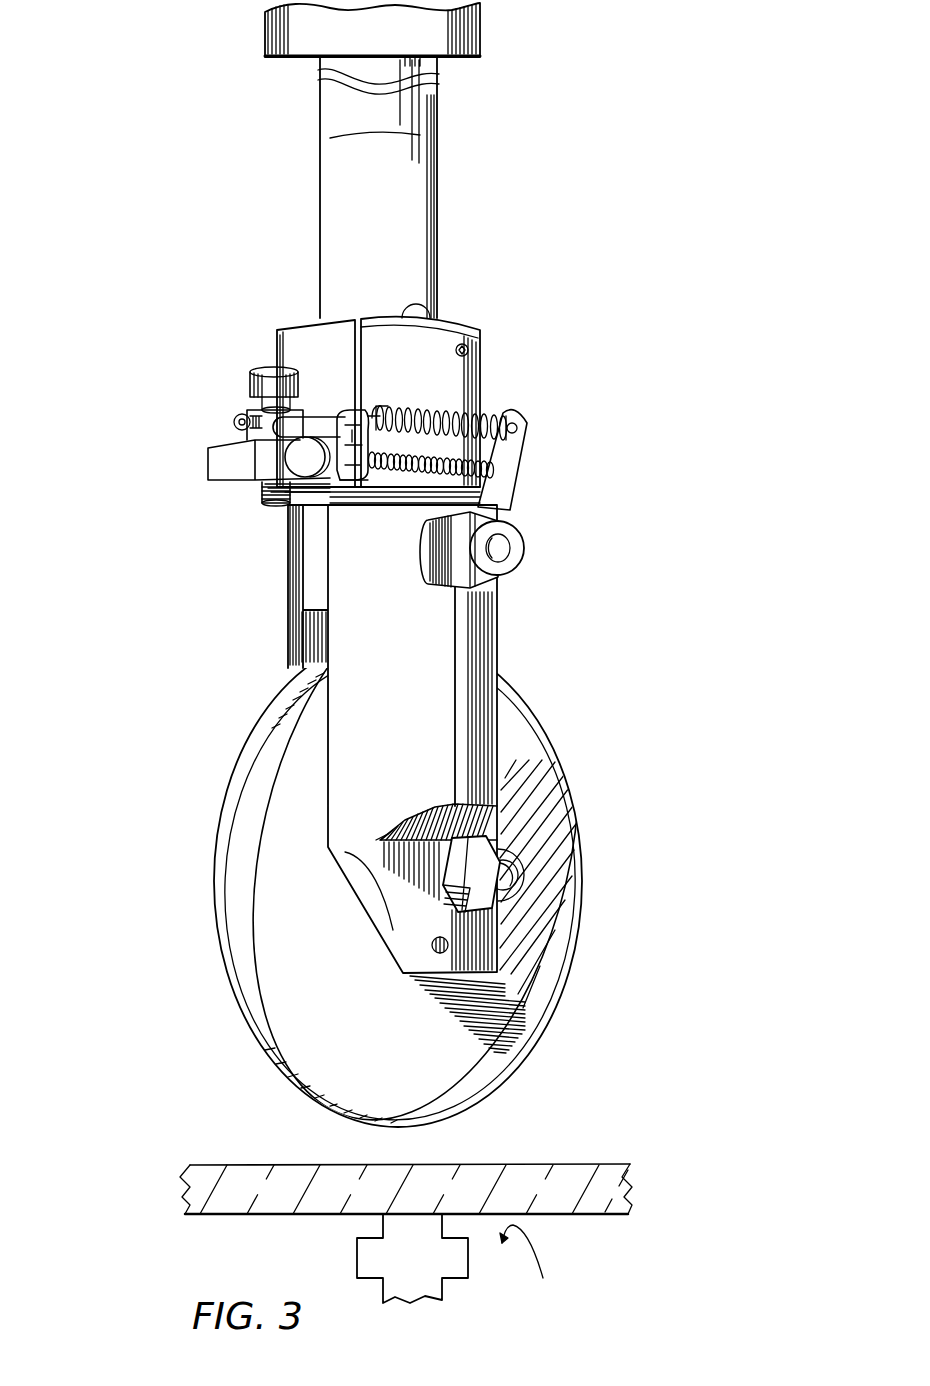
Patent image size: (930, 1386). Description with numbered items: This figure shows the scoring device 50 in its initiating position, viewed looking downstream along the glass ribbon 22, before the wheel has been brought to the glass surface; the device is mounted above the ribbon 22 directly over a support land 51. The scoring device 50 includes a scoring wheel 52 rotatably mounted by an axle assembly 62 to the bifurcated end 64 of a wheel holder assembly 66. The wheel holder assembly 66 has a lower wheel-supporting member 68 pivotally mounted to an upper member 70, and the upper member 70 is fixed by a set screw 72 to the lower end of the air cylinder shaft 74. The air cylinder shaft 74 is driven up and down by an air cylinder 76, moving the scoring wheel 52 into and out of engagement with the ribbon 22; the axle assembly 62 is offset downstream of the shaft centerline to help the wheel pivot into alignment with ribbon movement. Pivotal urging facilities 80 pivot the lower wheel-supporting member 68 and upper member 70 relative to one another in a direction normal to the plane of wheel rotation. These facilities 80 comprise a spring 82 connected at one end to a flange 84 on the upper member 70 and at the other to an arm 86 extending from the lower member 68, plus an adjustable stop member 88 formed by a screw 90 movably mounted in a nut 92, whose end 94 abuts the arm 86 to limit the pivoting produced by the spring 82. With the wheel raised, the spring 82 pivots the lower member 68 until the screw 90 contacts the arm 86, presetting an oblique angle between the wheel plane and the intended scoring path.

The ribbon 22 is at (548, 1165).
The scoring device 50 is at (535, 265).
The support land 51 is at (415, 1215).
The scoring wheel 52 is at (580, 866).
The axle assembly 62 is at (505, 835).
The bifurcated end 64 is at (500, 745).
The wheel holder assembly 66 is at (130, 378).
The lower wheel-supporting member 68 is at (232, 545).
The upper member 70 is at (278, 322).
The set screw 72 is at (470, 346).
The air cylinder shaft 74 is at (438, 161).
The air cylinder 76 is at (482, 20).
The pivotal urging facilities 80 is at (652, 487).
The spring 82 is at (495, 402).
The flange 84 is at (347, 417).
The arm 86 is at (513, 441).
The adjustable stop member 88 is at (185, 446).
The screw 90 is at (410, 476).
The nut 92 is at (353, 473).
The end 94 is at (488, 468).